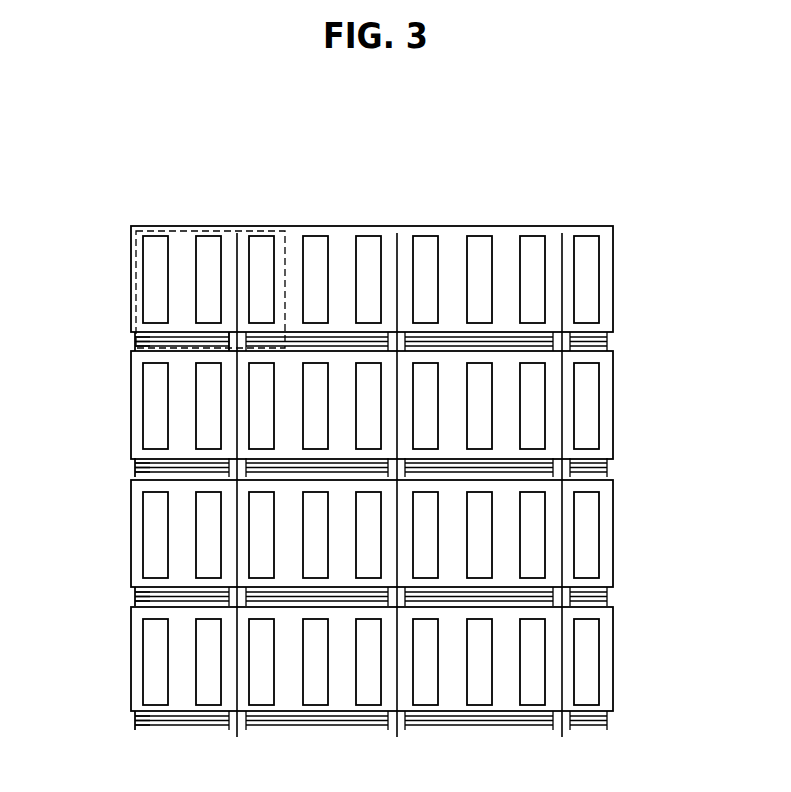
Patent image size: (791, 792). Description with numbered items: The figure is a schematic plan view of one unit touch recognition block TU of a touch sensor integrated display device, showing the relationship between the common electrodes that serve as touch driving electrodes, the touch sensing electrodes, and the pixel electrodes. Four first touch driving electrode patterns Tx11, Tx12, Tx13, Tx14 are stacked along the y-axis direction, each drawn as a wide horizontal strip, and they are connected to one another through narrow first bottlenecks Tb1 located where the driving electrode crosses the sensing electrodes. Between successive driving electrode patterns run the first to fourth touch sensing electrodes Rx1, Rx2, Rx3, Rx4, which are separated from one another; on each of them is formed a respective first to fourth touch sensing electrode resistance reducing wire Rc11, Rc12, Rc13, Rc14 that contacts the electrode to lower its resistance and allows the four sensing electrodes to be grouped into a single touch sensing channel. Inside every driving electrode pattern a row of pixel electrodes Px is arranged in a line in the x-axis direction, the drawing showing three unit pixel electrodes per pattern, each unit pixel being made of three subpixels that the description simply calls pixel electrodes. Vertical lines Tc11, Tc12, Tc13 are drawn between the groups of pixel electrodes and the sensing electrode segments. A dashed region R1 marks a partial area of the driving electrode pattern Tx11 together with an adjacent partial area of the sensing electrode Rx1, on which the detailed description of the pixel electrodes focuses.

The unit touch recognition block TU is at (154, 143).
The pixel electrode Px is at (157, 238).
The first bottleneck Tb1 is at (229, 333).
The first touch connection line Tc11 is at (237, 266).
The second touch connection line Tc12 is at (397, 265).
The third touch connection line Tc13 is at (562, 267).
The region R1 is at (134, 266).
The first touch sensing electrode resistance reducing wire Rc11 is at (137, 342).
The second touch sensing electrode resistance reducing wire Rc12 is at (137, 468).
The third touch sensing electrode resistance reducing wire Rc13 is at (137, 596).
The fourth touch sensing electrode resistance reducing wire Rc14 is at (137, 720).
The first touch driving electrode pattern Tx11 is at (613, 277).
The first touch driving electrode pattern Tx12 is at (613, 404).
The first touch driving electrode pattern Tx13 is at (613, 532).
The first touch driving electrode pattern Tx14 is at (613, 658).
The first touch sensing electrode Rx1 is at (607, 341).
The second touch sensing electrode Rx2 is at (607, 467).
The third touch sensing electrode Rx3 is at (607, 596).
The fourth touch sensing electrode Rx4 is at (607, 720).